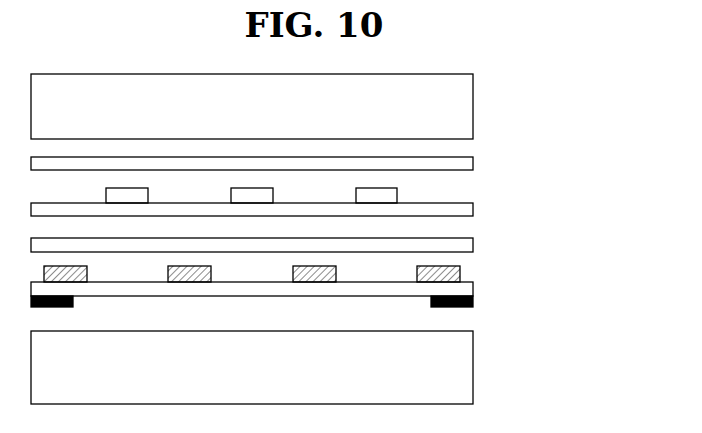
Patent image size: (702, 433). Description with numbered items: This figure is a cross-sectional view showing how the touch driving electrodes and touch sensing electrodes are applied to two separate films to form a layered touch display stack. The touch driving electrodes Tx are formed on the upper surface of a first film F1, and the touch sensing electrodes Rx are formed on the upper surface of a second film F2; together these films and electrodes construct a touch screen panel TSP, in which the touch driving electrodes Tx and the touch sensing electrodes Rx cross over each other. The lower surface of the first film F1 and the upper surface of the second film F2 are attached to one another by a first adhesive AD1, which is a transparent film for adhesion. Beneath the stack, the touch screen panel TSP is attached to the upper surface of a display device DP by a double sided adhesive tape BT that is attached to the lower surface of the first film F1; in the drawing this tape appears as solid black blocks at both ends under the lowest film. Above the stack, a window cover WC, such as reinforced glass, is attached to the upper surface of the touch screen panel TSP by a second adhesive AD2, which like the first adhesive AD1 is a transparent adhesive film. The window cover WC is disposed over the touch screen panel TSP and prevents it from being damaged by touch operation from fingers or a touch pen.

The window cover WC is at (465, 105).
The second adhesive AD2 is at (465, 165).
The touch sensing electrodes Rx is at (391, 192).
The second film F2 is at (465, 210).
The first adhesive AD1 is at (465, 245).
The touch driving electrodes Tx is at (455, 271).
The first film F1 is at (465, 290).
The double sided adhesive tape BT is at (473, 303).
The display device DP is at (465, 366).
The touch screen panel TSP is at (560, 189).